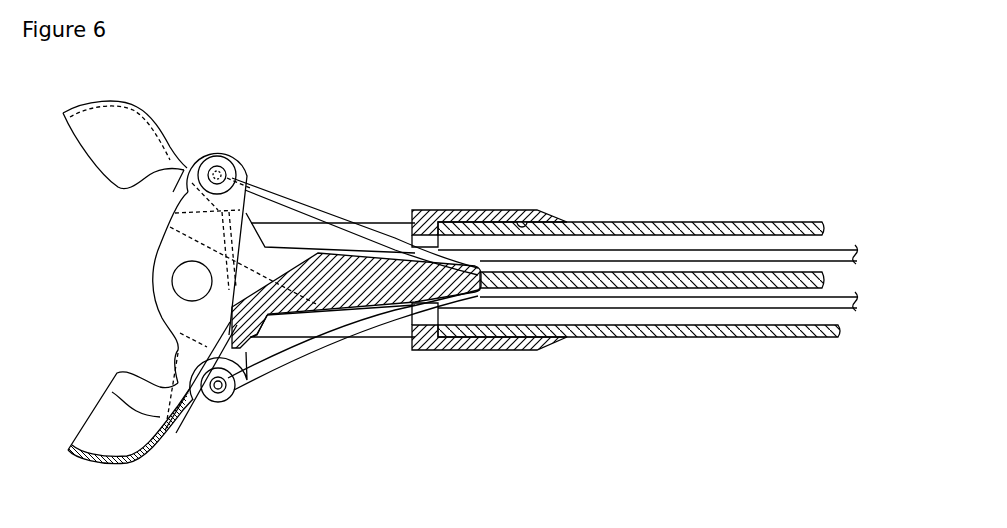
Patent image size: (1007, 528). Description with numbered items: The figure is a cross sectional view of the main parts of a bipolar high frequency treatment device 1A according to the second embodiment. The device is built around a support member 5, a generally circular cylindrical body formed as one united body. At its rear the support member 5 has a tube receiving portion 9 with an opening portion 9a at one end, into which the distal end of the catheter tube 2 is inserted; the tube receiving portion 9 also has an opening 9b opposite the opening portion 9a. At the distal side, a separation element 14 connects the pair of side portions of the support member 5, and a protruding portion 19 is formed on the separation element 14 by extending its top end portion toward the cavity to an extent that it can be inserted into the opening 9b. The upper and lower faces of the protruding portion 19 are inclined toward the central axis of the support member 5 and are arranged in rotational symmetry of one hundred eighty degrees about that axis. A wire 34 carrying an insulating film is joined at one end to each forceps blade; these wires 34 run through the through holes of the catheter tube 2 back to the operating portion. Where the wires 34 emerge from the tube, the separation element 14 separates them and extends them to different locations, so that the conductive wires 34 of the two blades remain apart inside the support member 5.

The bipolar high frequency treatment device 1A is at (318, 431).
The catheter tube 2 is at (658, 222).
The support member 5 is at (455, 354).
The tube receiving portion 9 is at (470, 210).
The opening portion 9a is at (521, 222).
The opening 9b is at (400, 222).
The separation element 14 is at (287, 257).
The protruding portion 19 is at (384, 262).
The wire 34 is at (323, 217).